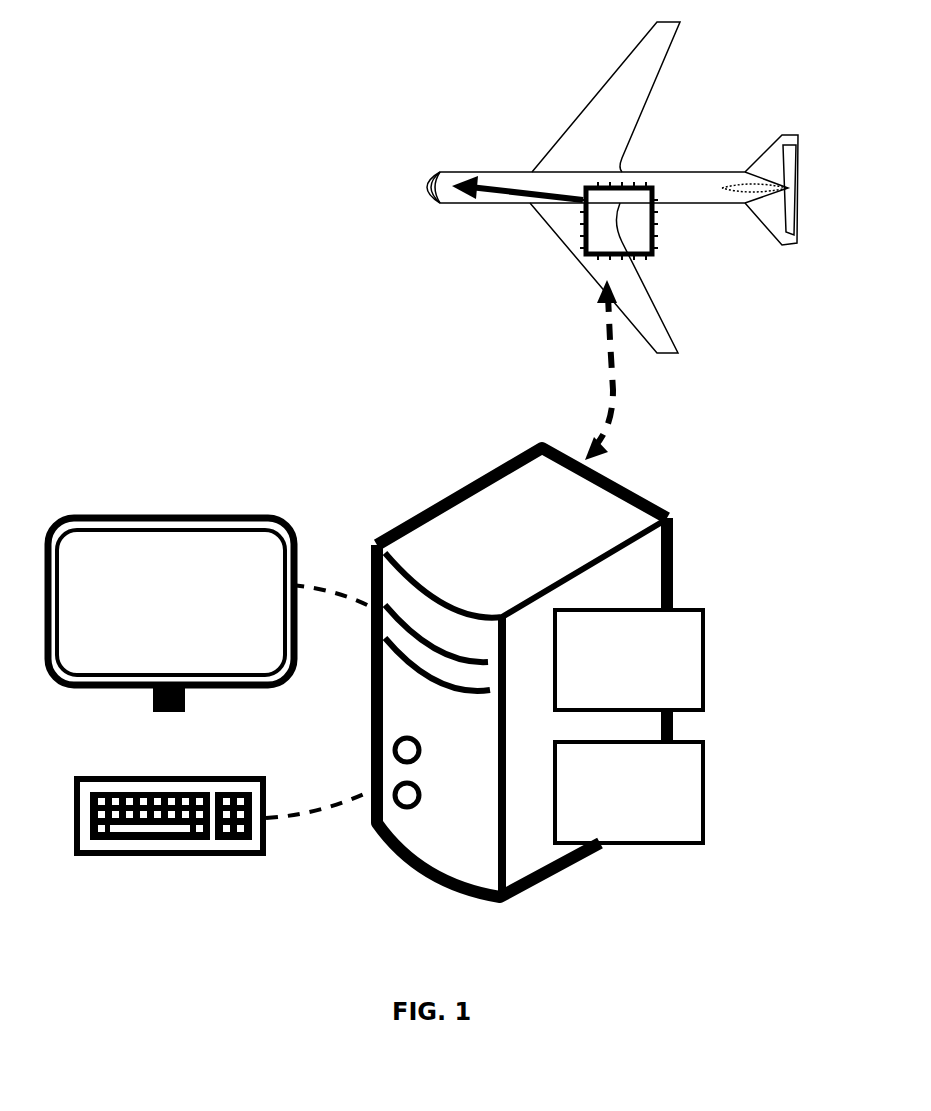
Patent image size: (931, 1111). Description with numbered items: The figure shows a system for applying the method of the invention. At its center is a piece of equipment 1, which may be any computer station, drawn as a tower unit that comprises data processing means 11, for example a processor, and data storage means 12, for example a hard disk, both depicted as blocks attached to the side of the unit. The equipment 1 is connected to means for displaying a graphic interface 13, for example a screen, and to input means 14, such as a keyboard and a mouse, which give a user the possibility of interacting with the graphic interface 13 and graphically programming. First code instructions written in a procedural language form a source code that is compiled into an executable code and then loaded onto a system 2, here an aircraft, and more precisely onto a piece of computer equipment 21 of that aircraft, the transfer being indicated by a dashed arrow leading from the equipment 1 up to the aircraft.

The piece of equipment 1 is at (455, 478).
The system 2 is at (408, 180).
The piece of computer equipment 21 is at (668, 260).
The data processing means 11 is at (715, 660).
The data storage means 12 is at (716, 801).
The means for displaying a graphic interface 13 is at (172, 538).
The input means 14 is at (169, 866).